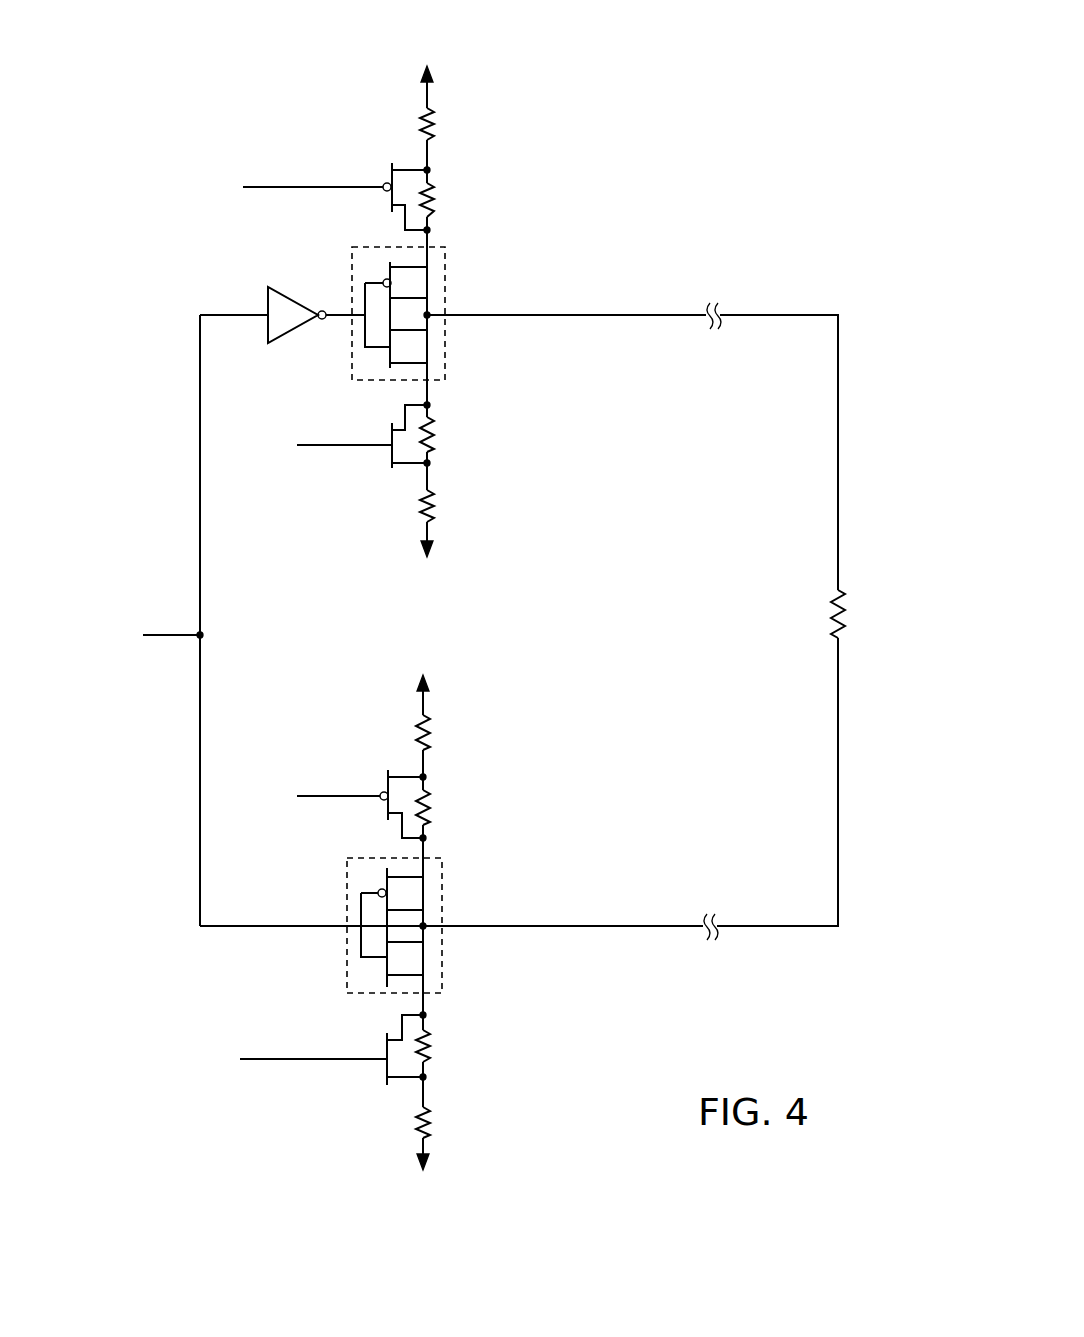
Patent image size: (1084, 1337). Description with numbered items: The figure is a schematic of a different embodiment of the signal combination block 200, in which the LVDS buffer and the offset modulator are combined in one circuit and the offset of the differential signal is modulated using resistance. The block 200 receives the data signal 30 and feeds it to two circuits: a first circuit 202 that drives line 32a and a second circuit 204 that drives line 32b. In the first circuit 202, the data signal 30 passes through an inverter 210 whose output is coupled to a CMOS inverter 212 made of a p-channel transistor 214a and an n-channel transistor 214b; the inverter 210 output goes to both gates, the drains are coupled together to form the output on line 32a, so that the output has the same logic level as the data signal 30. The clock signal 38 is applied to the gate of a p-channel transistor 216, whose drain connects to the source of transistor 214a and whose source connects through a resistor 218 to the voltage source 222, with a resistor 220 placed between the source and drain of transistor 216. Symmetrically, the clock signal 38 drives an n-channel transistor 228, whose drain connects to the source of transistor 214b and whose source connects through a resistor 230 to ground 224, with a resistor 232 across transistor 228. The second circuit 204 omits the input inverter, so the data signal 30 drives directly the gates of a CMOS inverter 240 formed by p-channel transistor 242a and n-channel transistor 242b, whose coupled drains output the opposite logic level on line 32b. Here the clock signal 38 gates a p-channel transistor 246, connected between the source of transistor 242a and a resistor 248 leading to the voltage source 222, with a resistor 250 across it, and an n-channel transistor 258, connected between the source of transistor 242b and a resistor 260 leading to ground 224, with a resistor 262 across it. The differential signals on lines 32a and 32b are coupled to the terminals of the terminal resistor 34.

The signal combination block 200 is at (710, 58).
The first circuit 202 is at (246, 106).
The second circuit 204 is at (240, 1128).
The data signal 30 is at (167, 634).
The line 32a is at (648, 314).
The line 32b is at (645, 925).
The terminal resistor 34 is at (843, 615).
The clock signal 38 is at (322, 186).
The inverter 210 is at (285, 292).
The inverter 212 is at (456, 248).
The p-channel transistor 214a is at (398, 256).
The n-channel transistor 214b is at (396, 380).
The p-channel transistor 216 is at (400, 158).
The resistor 218 is at (437, 125).
The resistor 220 is at (437, 204).
The voltage source 222 is at (442, 70).
The ground 224 is at (440, 552).
The n-channel transistor 228 is at (398, 487).
The resistor 230 is at (436, 514).
The resistor 232 is at (436, 440).
The inverter 240 is at (456, 860).
The p-channel transistor 242a is at (395, 868).
The n-channel transistor 242b is at (390, 994).
The p-channel transistor 246 is at (395, 763).
The resistor 248 is at (432, 735).
The resistor 250 is at (432, 812).
The n-channel transistor 258 is at (392, 1100).
The resistor 260 is at (432, 1128).
The resistor 262 is at (432, 1050).